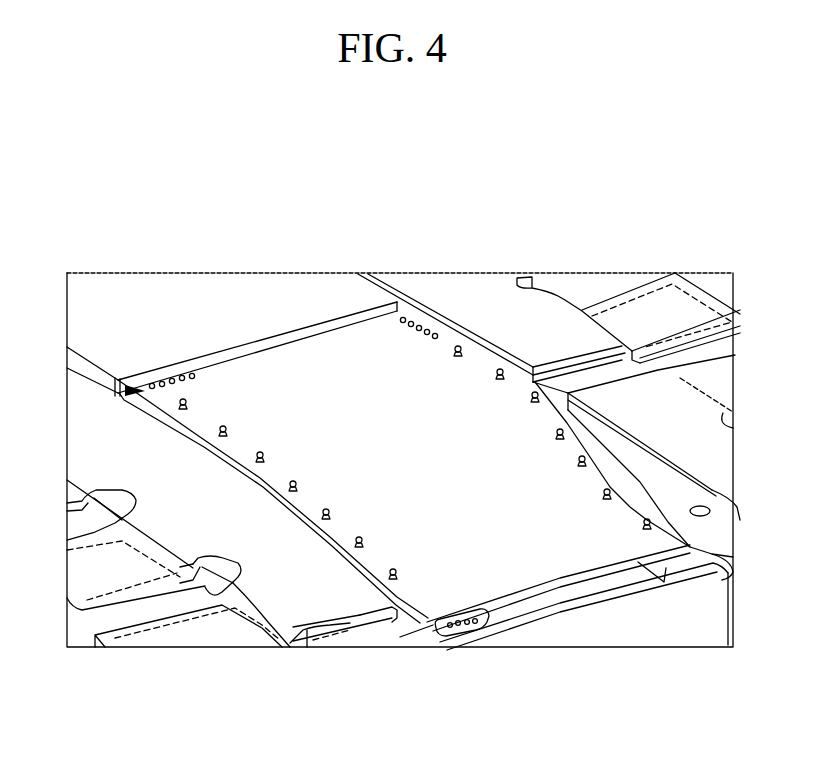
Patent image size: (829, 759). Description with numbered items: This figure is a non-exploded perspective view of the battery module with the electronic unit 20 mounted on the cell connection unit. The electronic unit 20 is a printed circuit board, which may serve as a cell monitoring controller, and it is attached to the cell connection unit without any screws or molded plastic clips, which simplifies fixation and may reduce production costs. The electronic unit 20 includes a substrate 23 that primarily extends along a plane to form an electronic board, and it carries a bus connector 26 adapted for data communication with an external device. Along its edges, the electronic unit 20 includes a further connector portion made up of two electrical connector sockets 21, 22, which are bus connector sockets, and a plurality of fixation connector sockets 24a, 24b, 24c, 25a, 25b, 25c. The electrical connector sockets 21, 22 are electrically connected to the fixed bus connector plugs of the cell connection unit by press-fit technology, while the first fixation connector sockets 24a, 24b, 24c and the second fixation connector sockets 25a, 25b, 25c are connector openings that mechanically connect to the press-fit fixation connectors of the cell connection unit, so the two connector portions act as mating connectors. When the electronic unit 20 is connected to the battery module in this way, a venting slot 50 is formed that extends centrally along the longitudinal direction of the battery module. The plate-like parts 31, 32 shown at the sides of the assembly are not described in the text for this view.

The electronic unit 20 is at (294, 326).
The electrical connector socket 21 is at (431, 310).
The electrical connector socket 22 is at (116, 394).
The substrate 23 is at (617, 565).
The first fixation connector socket 24a is at (181, 408).
The first fixation connector socket 24b is at (221, 436).
The first fixation connector socket 24c is at (408, 612).
The second fixation connector socket 25a is at (497, 357).
The second fixation connector socket 25b is at (505, 375).
The second fixation connector socket 25c is at (605, 492).
The bus connector 26 is at (487, 617).
The cover plate 31 is at (62, 578).
The cover plate 32 is at (700, 294).
The venting slot 50 is at (572, 616).